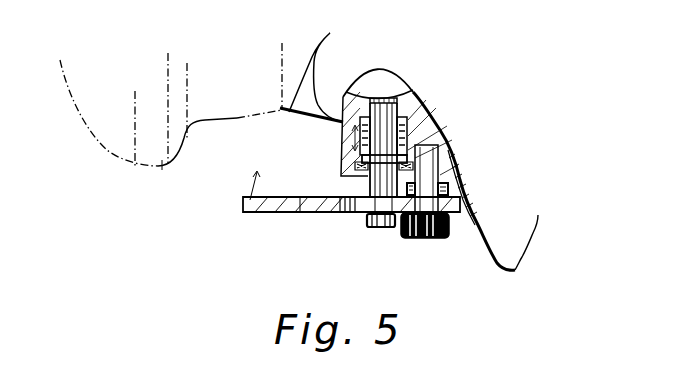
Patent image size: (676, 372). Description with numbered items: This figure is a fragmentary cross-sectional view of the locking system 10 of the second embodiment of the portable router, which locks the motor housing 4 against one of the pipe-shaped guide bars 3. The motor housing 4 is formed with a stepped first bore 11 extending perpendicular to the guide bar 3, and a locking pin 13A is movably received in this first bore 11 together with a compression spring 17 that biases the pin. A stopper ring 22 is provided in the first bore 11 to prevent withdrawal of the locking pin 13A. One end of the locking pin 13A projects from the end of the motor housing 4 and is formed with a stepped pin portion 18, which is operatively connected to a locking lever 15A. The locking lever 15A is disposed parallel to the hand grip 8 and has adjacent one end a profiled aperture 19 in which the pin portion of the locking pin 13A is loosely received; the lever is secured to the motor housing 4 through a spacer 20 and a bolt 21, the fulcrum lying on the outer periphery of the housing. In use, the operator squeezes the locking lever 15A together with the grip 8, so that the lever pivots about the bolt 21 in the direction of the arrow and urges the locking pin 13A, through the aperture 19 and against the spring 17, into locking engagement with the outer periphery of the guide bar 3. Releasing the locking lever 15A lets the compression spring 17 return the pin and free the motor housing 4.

The guide bar 3 is at (380, 97).
The motor housing 4 is at (348, 124).
The hand grip 8 is at (160, 168).
The locking system 10 is at (340, 221).
The first bore 11 is at (408, 140).
The locking pin 13A is at (408, 128).
The locking lever 15A is at (278, 212).
The compression spring 17 is at (416, 101).
The stepped pin portion 18 is at (368, 193).
The profiled aperture 19 is at (350, 214).
The spacer 20 is at (448, 193).
The bolt 21 is at (428, 240).
The stopper ring 22 is at (414, 168).